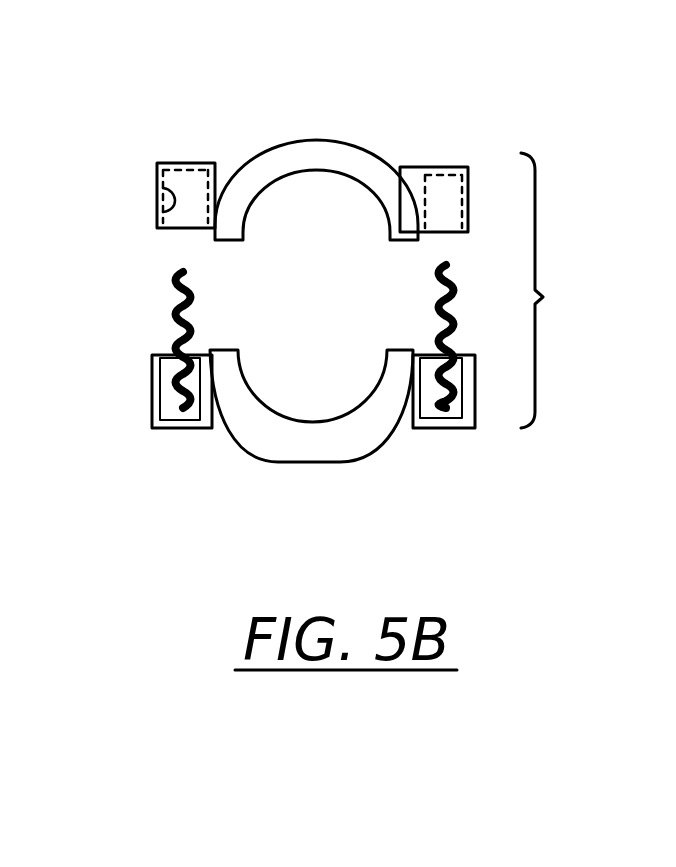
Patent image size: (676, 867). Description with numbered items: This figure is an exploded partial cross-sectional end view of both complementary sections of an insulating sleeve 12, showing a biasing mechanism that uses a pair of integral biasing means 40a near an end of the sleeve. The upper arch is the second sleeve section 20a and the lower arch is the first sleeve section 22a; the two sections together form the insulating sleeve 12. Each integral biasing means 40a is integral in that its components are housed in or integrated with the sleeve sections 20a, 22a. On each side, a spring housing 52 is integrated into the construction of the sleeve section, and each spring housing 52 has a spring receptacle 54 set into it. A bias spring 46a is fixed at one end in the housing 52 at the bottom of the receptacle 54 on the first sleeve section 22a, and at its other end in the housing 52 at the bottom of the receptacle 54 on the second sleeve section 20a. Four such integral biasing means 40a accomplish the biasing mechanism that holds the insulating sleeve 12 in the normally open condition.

The insulating sleeve 12 is at (300, 108).
The second sleeve section 20a is at (362, 142).
The first sleeve section 22a is at (350, 460).
The integral biasing means 40a is at (595, 290).
The bias spring 46a is at (435, 303).
The spring housing 52 is at (219, 162).
The spring receptacle 54 is at (158, 216).